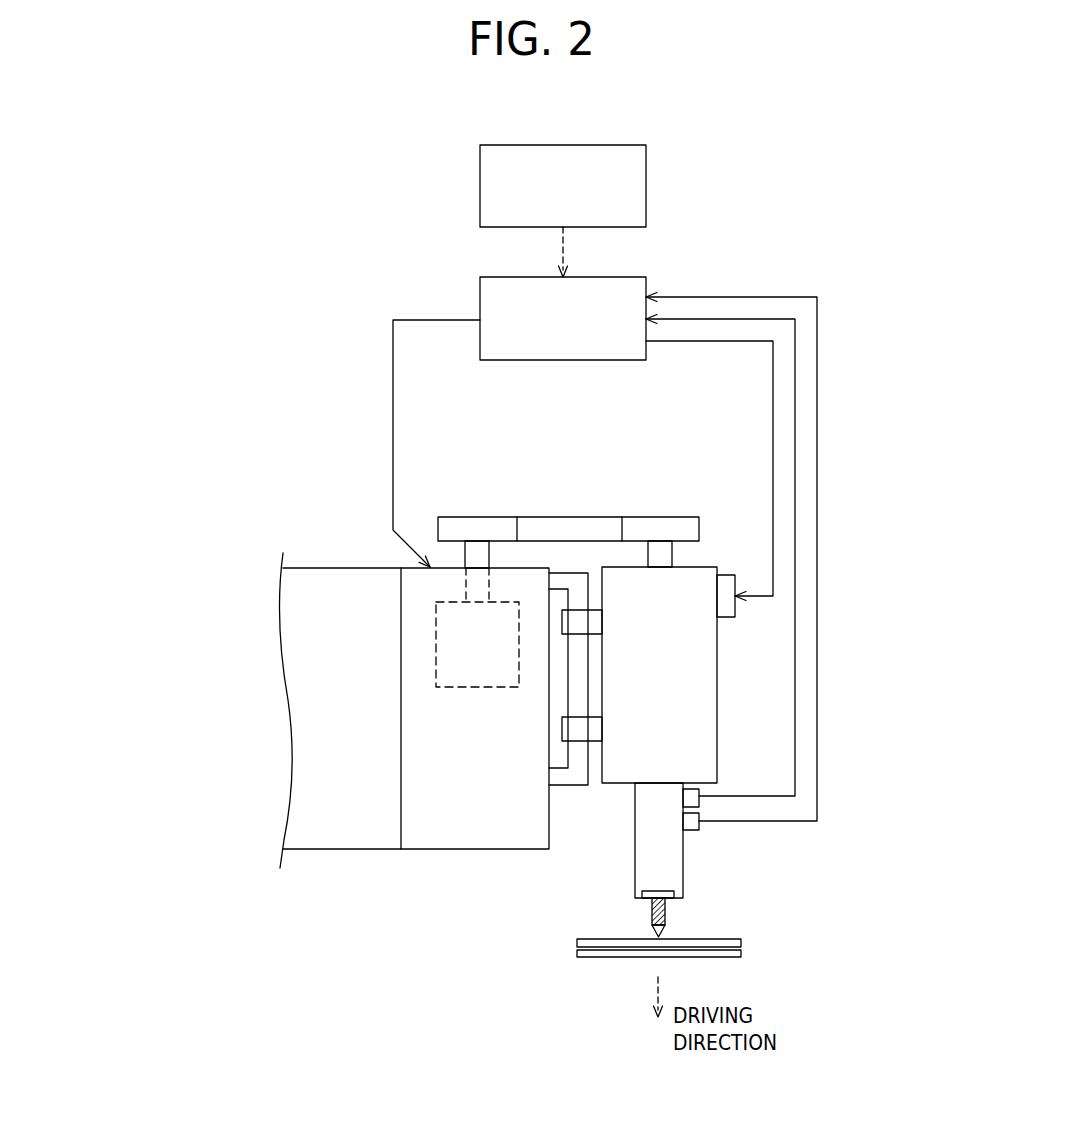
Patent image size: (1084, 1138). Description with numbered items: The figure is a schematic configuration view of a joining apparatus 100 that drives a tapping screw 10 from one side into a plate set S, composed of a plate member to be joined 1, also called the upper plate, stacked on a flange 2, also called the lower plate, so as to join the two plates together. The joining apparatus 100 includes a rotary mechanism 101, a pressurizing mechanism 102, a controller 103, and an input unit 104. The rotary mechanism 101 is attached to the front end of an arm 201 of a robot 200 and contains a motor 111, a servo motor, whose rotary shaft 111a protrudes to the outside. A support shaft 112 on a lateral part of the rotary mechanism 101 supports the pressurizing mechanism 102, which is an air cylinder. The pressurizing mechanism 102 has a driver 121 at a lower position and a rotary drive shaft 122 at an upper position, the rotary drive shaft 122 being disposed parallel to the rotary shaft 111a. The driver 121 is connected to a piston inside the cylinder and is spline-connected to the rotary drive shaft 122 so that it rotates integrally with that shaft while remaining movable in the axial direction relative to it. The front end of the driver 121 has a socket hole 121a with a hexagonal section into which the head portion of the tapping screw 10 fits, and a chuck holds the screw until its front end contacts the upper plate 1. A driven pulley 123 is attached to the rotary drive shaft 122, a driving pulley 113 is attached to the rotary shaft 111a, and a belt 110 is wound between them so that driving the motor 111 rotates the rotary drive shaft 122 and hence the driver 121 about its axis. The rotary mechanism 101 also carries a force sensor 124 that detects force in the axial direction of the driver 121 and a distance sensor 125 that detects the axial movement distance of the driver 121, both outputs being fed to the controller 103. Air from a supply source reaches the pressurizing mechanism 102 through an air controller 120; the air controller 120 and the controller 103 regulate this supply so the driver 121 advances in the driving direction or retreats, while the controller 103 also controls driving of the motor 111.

The joining apparatus 100 is at (330, 306).
The input unit 104 is at (647, 165).
The controller 103 is at (647, 282).
The belt 110 is at (565, 524).
The pulley (driving pulley) 113 is at (515, 530).
The pulley (driven pulley) 123 is at (620, 515).
The rotary shaft 111a is at (470, 555).
The rotary drive shaft 122 is at (667, 555).
The robot 200 is at (260, 588).
The arm 201 is at (312, 565).
The rotary mechanism 101 is at (420, 858).
The motor 111 is at (432, 632).
The support shaft 112 is at (567, 696).
The pressurizing mechanism 102 is at (710, 534).
The air controller 120 is at (722, 618).
The driver 121 is at (635, 868).
The force sensor 124 is at (693, 795).
The distance sensor 125 is at (690, 826).
The socket hole 121a is at (660, 891).
The tapping screw 10 is at (666, 913).
The plate member to be joined (upper plate) 1 is at (741, 943).
The flange (lower plate) 2 is at (742, 957).
The plate set S is at (604, 960).